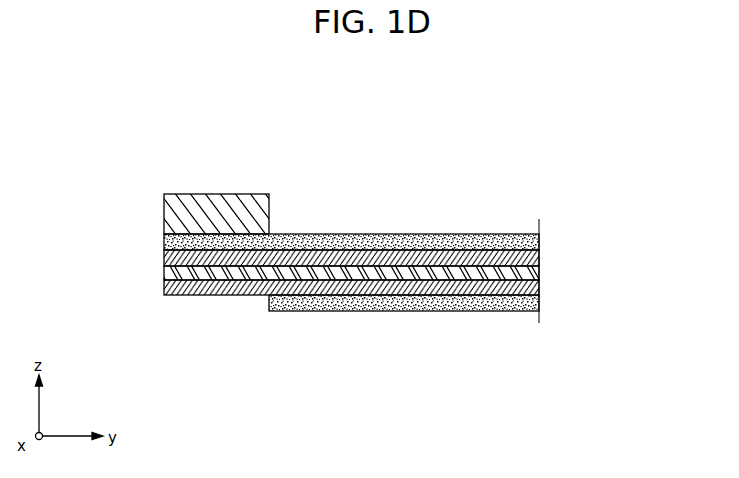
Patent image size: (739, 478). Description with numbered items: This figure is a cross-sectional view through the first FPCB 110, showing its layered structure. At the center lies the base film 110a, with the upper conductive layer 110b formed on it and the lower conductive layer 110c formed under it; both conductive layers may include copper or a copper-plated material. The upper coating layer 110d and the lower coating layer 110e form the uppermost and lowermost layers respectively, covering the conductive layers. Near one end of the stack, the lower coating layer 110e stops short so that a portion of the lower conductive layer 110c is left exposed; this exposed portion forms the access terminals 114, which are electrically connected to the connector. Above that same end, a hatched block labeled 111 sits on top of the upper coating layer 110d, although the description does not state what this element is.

The first FPCB 110 is at (394, 236).
The base film 110a is at (539, 270).
The upper conductive layer 110b is at (539, 257).
The lower conductive layer 110c is at (539, 284).
The upper coating layer 110d is at (539, 243).
The lower coating layer 110e is at (539, 300).
The block / electrode 111 is at (164, 210).
The access terminals 114 is at (185, 296).